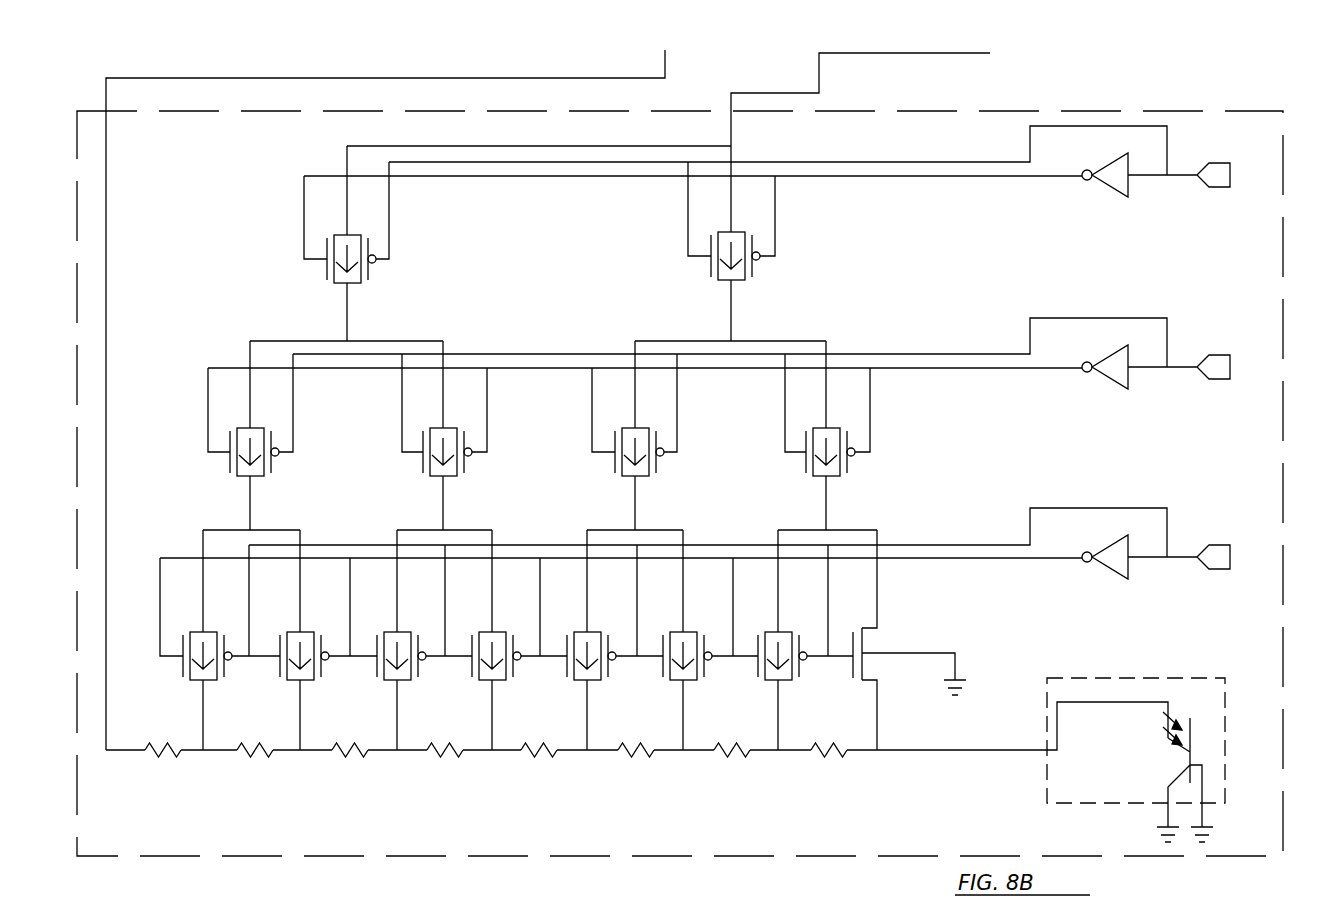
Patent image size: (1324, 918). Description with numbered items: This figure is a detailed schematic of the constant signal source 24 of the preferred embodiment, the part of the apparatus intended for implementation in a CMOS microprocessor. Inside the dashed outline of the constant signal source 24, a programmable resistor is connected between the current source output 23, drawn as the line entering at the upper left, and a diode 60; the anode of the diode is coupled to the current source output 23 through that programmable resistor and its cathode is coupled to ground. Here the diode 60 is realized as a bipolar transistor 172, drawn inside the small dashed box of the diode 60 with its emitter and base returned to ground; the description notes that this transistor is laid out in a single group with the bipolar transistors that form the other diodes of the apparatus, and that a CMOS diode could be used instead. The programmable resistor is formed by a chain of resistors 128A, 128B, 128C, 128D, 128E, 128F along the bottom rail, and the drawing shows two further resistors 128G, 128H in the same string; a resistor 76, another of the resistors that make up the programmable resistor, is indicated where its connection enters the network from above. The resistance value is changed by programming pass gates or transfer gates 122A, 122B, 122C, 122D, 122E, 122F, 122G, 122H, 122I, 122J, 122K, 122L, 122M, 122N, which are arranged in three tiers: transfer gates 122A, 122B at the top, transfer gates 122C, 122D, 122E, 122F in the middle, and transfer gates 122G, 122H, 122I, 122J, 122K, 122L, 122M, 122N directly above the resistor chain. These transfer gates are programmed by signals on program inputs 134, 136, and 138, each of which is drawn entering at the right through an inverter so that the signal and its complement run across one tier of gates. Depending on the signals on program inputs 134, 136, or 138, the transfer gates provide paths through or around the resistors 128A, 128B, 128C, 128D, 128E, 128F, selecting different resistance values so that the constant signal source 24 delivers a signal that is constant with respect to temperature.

The current source output 23 is at (543, 78).
The constant signal source 24 is at (1283, 111).
The resistor 76 is at (975, 53).
The diode 60 is at (1215, 678).
The bipolar transistor 172 is at (1195, 742).
The program input 134 is at (1190, 178).
The program input 136 is at (1190, 370).
The program input 138 is at (1185, 555).
The transfer gate 122A is at (327, 277).
The transfer gate 122B is at (752, 274).
The transfer gate 122C is at (847, 470).
The transfer gate 122D is at (656, 470).
The transfer gate 122E is at (464, 470).
The transfer gate 122F is at (271, 470).
The transfer gate 122G is at (225, 675).
The transfer gate 122H is at (322, 675).
The transfer gate 122I is at (419, 675).
The transfer gate 122J is at (514, 675).
The transfer gate 122K is at (609, 675).
The transfer gate 122L is at (705, 675).
The transfer gate 122M is at (800, 675).
The transfer gate 122N is at (877, 628).
The resistor 128A is at (160, 760).
The resistor 128B is at (252, 760).
The resistor 128C is at (347, 760).
The resistor 128D is at (442, 760).
The resistor 128E is at (536, 760).
The resistor 128F is at (633, 760).
The resistor 128G is at (729, 760).
The resistor 128H is at (826, 760).